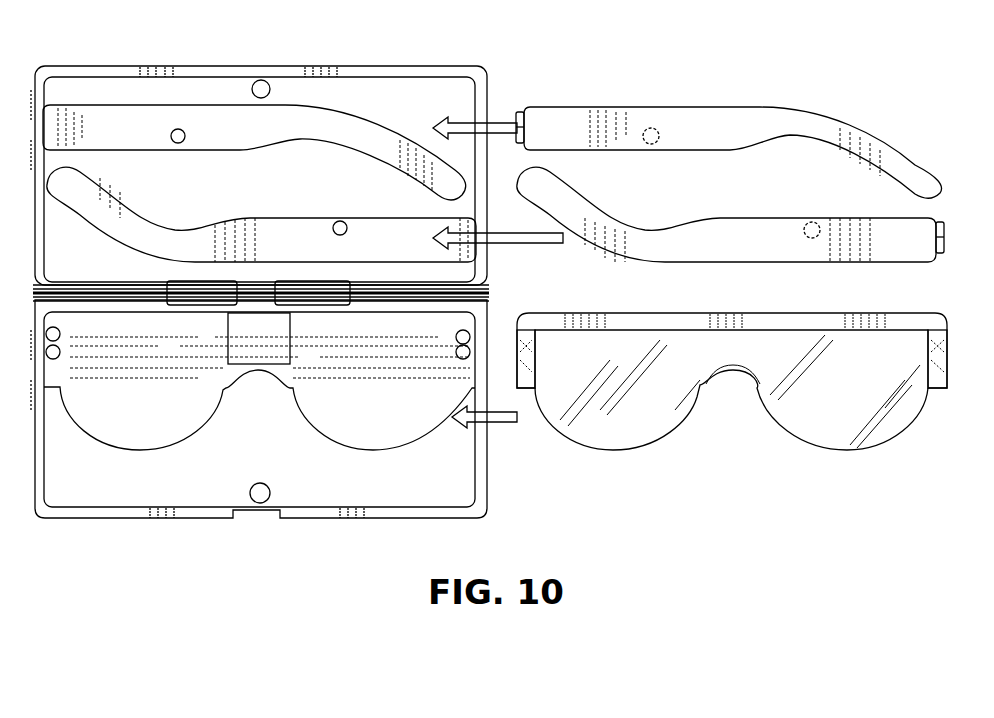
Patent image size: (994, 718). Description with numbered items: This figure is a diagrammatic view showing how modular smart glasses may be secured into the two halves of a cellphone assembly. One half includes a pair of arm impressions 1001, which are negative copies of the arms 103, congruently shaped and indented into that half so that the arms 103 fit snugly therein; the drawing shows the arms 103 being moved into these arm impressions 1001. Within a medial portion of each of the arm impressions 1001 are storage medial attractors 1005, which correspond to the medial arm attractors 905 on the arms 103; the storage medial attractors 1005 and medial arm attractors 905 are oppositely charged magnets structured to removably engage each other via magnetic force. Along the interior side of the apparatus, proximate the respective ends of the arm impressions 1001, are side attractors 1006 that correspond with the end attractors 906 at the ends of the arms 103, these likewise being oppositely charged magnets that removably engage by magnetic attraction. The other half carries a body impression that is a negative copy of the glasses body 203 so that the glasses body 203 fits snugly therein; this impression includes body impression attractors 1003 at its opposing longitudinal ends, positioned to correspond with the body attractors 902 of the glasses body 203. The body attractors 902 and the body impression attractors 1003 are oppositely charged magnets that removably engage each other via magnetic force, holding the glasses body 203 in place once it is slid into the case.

The arms 103 is at (782, 120).
The glasses body 203 is at (650, 420).
The body attractors 902 is at (530, 389).
The medial arm attractors 905 is at (650, 127).
The end attractors 906 is at (522, 110).
The arm impressions 1001 is at (313, 228).
The body impression attractors 1003 is at (59, 339).
The storage medial attractors 1005 is at (178, 129).
The side attractors 1006 is at (36, 77).